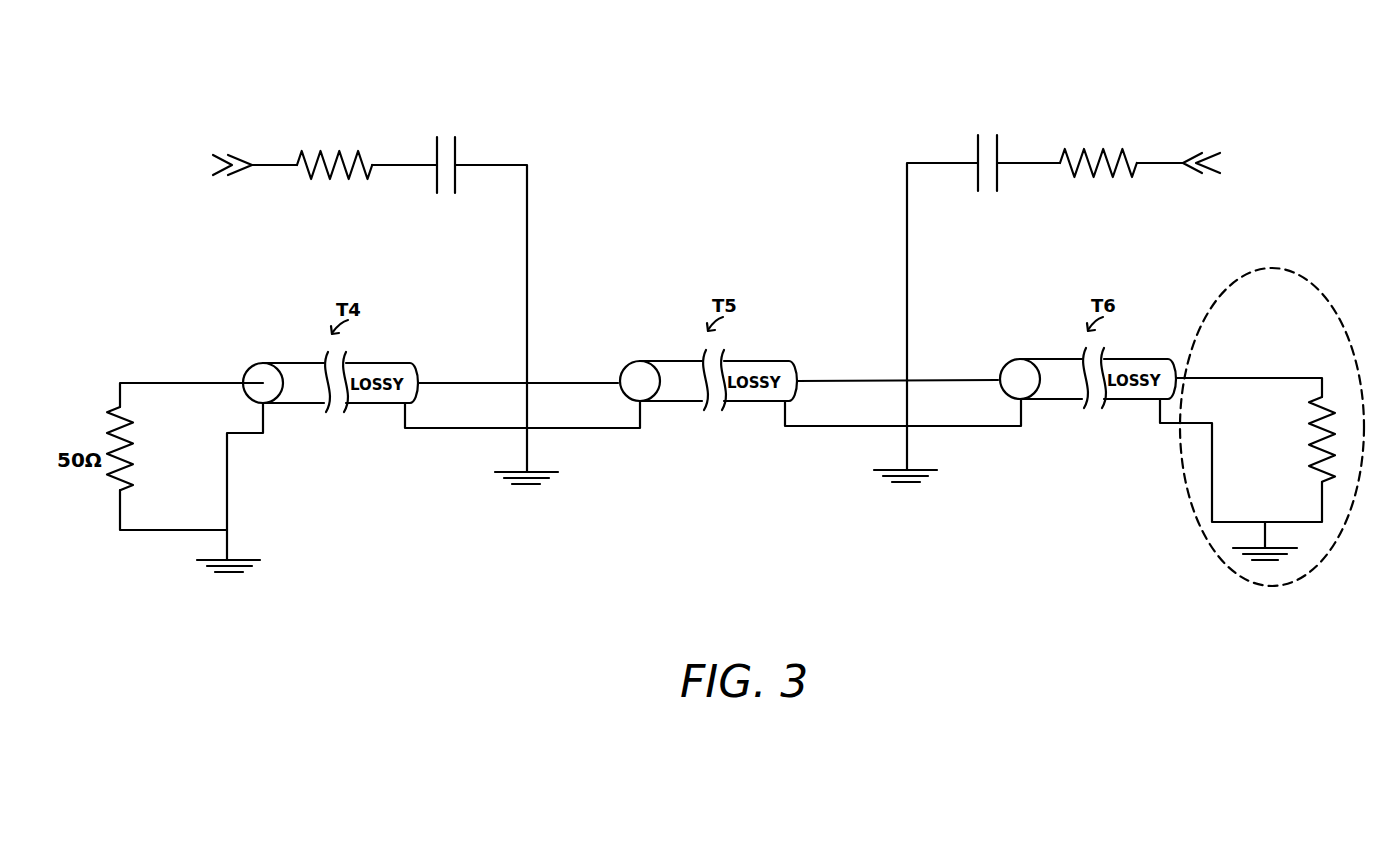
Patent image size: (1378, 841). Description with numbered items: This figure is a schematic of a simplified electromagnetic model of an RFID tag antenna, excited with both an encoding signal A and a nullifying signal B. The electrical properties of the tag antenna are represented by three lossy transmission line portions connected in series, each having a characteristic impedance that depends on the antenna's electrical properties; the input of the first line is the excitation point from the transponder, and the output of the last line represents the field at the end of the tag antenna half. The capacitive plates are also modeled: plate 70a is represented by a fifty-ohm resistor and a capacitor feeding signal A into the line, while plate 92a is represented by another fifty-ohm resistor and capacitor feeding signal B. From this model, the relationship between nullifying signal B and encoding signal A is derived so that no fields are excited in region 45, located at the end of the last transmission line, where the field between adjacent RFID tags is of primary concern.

The capacitive plate 70a is at (409, 71).
The capacitive plate 92a is at (1032, 78).
The region 45 is at (1275, 266).